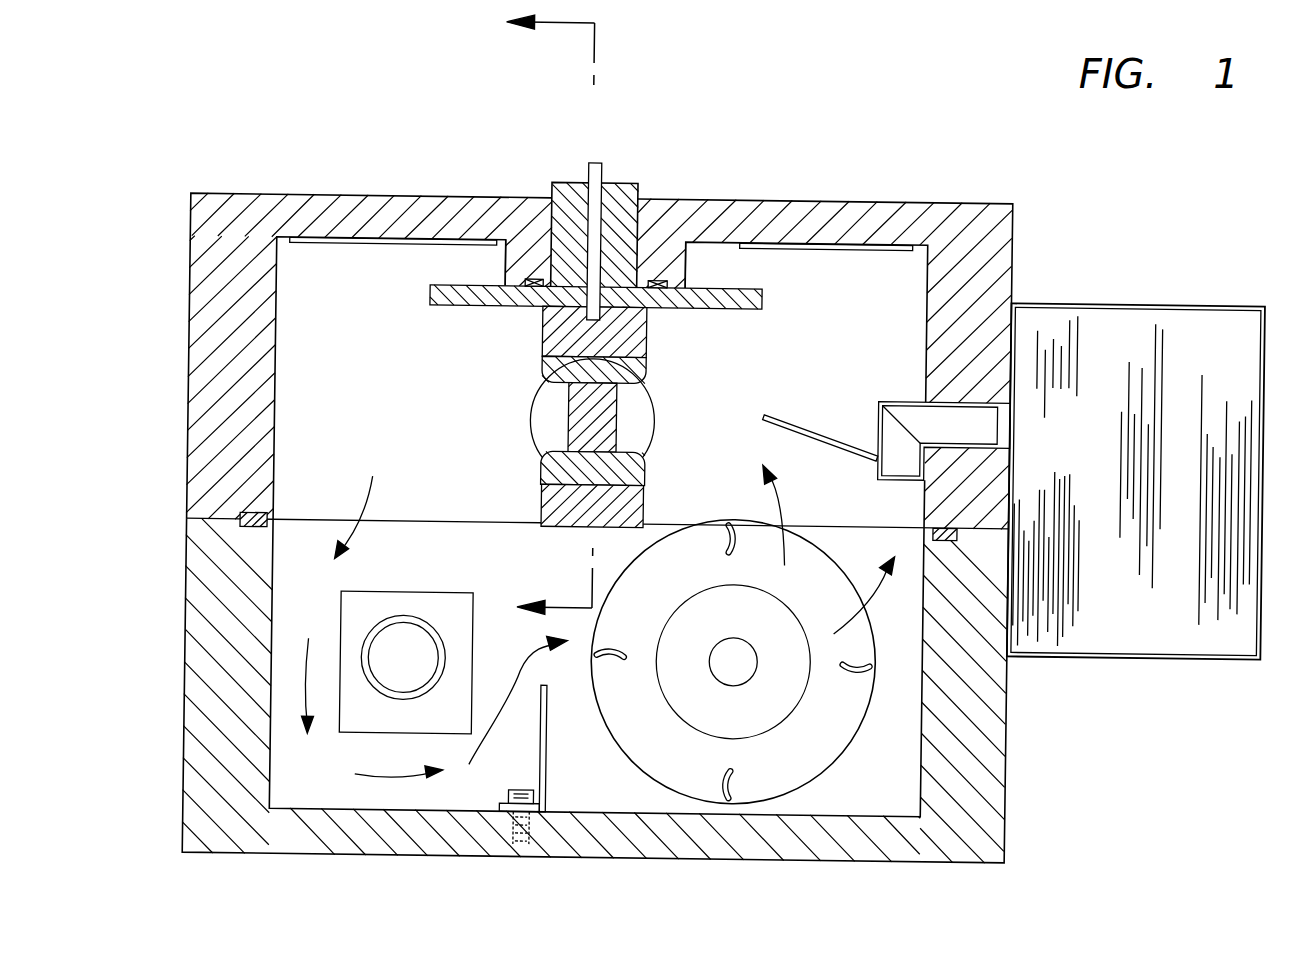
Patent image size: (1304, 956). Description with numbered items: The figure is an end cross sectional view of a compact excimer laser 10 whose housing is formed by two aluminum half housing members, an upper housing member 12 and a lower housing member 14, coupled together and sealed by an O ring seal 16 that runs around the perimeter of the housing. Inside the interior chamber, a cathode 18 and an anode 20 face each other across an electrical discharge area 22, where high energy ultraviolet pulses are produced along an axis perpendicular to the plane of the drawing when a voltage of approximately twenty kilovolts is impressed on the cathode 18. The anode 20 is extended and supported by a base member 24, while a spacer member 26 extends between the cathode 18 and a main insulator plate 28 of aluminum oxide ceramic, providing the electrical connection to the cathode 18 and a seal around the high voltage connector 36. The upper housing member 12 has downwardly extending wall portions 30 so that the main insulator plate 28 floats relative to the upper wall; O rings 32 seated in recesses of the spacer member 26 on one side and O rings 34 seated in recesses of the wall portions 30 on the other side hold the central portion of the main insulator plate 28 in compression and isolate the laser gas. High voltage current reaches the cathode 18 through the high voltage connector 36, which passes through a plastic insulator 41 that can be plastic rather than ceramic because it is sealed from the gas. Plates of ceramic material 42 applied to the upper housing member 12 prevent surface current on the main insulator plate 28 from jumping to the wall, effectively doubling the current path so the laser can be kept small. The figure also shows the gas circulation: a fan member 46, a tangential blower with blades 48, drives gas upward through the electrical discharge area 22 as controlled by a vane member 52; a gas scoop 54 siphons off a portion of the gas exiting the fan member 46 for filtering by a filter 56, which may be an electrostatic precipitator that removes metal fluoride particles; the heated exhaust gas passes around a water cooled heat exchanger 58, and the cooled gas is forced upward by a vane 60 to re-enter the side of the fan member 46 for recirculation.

The excimer laser 10 is at (792, 160).
The upper housing member 12 is at (367, 197).
The lower housing member 14 is at (372, 860).
The O ring seal 16 is at (240, 524).
The cathode 18 is at (644, 372).
The anode 20 is at (632, 462).
The electrical discharge area 22 is at (582, 408).
The base member 24 is at (550, 498).
The spacer member 26 is at (644, 339).
The main insulator plate 28 is at (762, 298).
The wall portions 30 is at (506, 264).
The O rings 32 is at (638, 312).
The O rings 34 is at (656, 280).
The high voltage connector 36 is at (591, 163).
The plastic insulator 41 is at (616, 183).
The plates of ceramic material 42 is at (382, 247).
The fan member 46 is at (743, 662).
The blades 48 is at (733, 782).
The vane member 52 is at (789, 416).
The gas scoop 54 is at (888, 478).
The filter 56 is at (1140, 298).
The heat exchanger 58 is at (447, 598).
The vane 60 is at (549, 755).